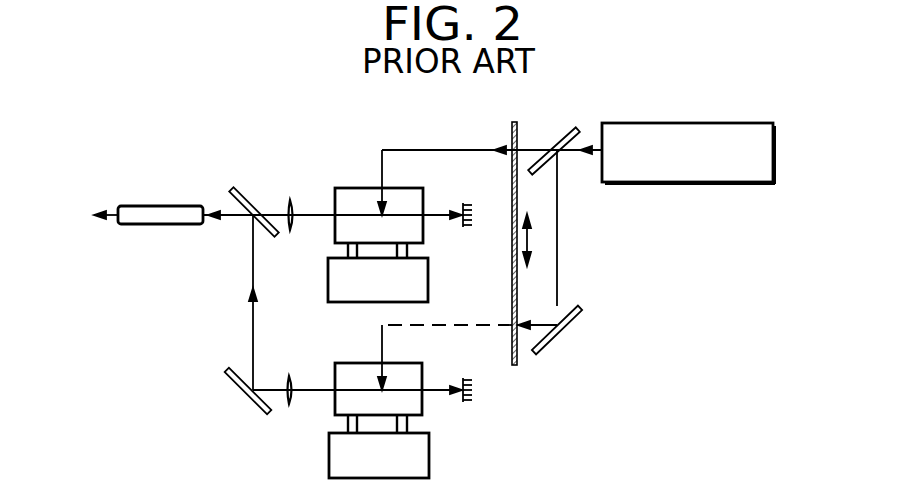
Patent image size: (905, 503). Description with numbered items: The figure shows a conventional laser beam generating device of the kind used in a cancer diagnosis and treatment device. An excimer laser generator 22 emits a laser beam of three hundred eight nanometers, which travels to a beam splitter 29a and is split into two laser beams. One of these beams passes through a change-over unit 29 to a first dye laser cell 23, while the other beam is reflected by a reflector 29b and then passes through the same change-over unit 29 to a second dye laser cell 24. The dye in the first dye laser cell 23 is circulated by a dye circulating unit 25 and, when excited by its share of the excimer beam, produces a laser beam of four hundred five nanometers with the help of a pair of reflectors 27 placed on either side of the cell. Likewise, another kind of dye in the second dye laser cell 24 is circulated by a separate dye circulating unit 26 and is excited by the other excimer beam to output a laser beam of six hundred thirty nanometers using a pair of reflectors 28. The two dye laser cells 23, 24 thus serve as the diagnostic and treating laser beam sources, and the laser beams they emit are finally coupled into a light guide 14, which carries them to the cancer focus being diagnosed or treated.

The light guide 14 is at (133, 208).
The excimer laser generator 22 is at (680, 184).
The first dye laser cell 23 is at (350, 188).
The second dye laser cell 24 is at (424, 400).
The dye circulating unit 25 is at (330, 280).
The dye circulating unit 26 is at (430, 470).
The pair of reflectors 27 is at (292, 200).
The pair of reflectors 28 is at (290, 376).
The change-over unit 29 is at (517, 360).
The beam splitter 29a is at (567, 130).
The reflector 29b is at (581, 310).